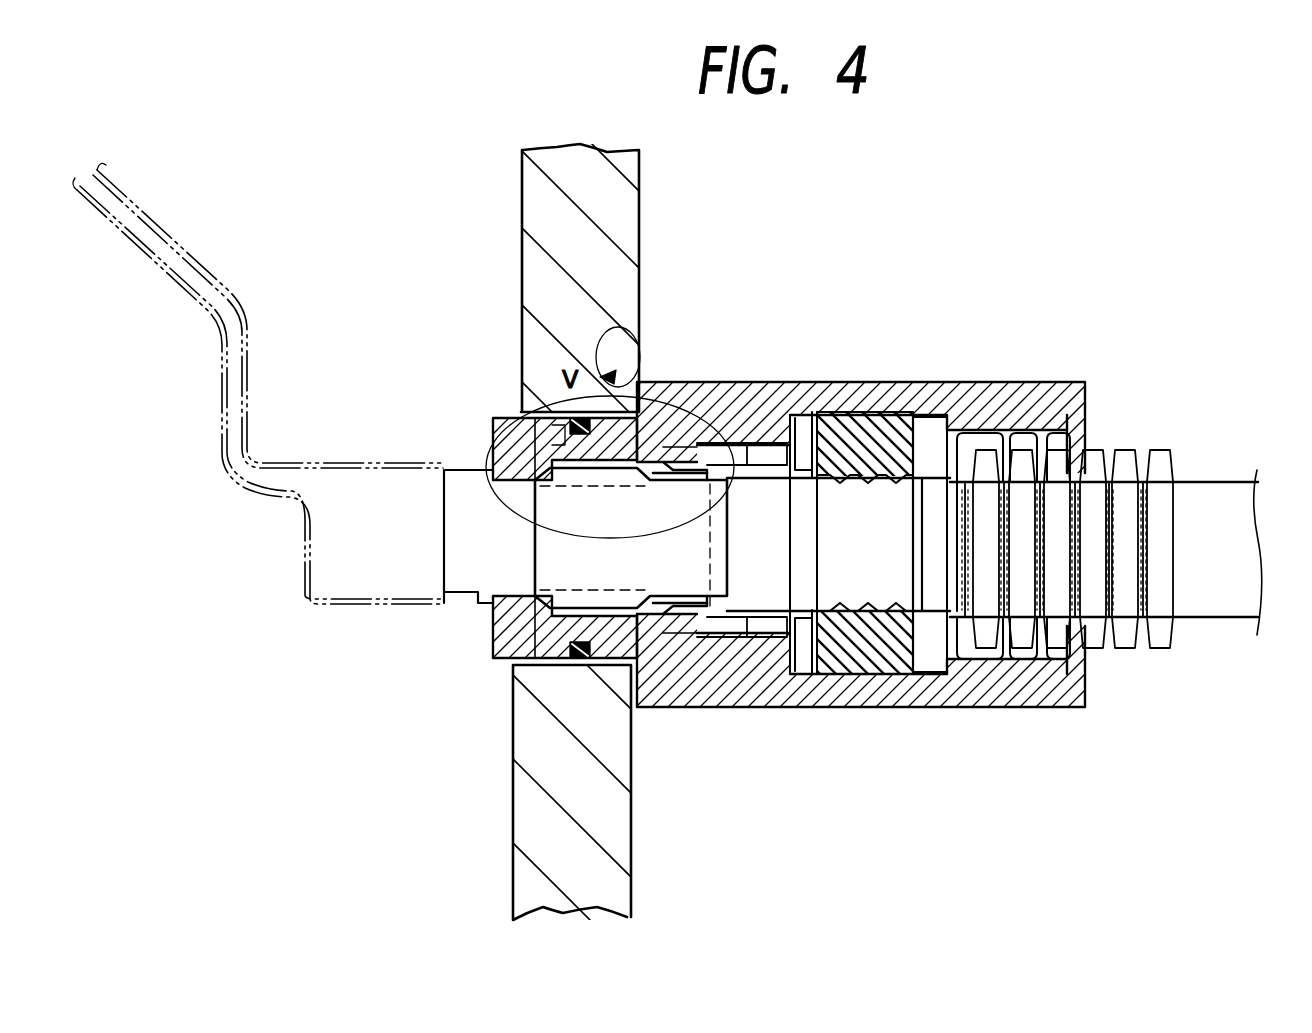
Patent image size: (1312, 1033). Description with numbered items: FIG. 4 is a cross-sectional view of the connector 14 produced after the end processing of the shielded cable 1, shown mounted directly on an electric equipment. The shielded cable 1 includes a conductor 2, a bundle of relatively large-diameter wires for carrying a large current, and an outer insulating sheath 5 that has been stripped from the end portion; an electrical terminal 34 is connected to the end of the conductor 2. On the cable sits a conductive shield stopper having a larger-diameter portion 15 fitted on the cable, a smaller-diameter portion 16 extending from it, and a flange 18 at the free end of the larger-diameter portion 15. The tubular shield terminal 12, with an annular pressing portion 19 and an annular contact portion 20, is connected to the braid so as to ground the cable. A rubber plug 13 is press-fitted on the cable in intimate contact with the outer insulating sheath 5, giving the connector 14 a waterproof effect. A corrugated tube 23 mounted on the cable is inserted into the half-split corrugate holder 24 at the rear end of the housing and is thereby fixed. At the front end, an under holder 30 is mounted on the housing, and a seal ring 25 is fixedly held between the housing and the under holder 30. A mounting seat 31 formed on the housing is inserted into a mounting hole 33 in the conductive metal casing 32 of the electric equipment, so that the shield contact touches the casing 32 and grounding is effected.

The shielded cable 1 is at (1210, 470).
The conductor 2 is at (458, 468).
The outer insulating sheath 5 is at (1240, 480).
The shield terminal 12 is at (695, 588).
The rubber plug 13 is at (880, 410).
The connector 14 is at (868, 352).
The larger-diameter portion 15 is at (760, 455).
The smaller-diameter portion 16 is at (658, 455).
The flange 18 is at (800, 415).
The annular pressing portion 19 is at (762, 594).
The annular contact portion 20 is at (493, 627).
The corrugated tube 23 is at (1128, 455).
The corrugate holder 24 is at (1060, 420).
The seal ring 25 is at (576, 652).
The under holder 30 is at (488, 647).
The mounting seat 31 is at (643, 343).
The casing 32 is at (640, 203).
The mounting hole 33 is at (540, 385).
The electrical terminal 34 is at (360, 468).